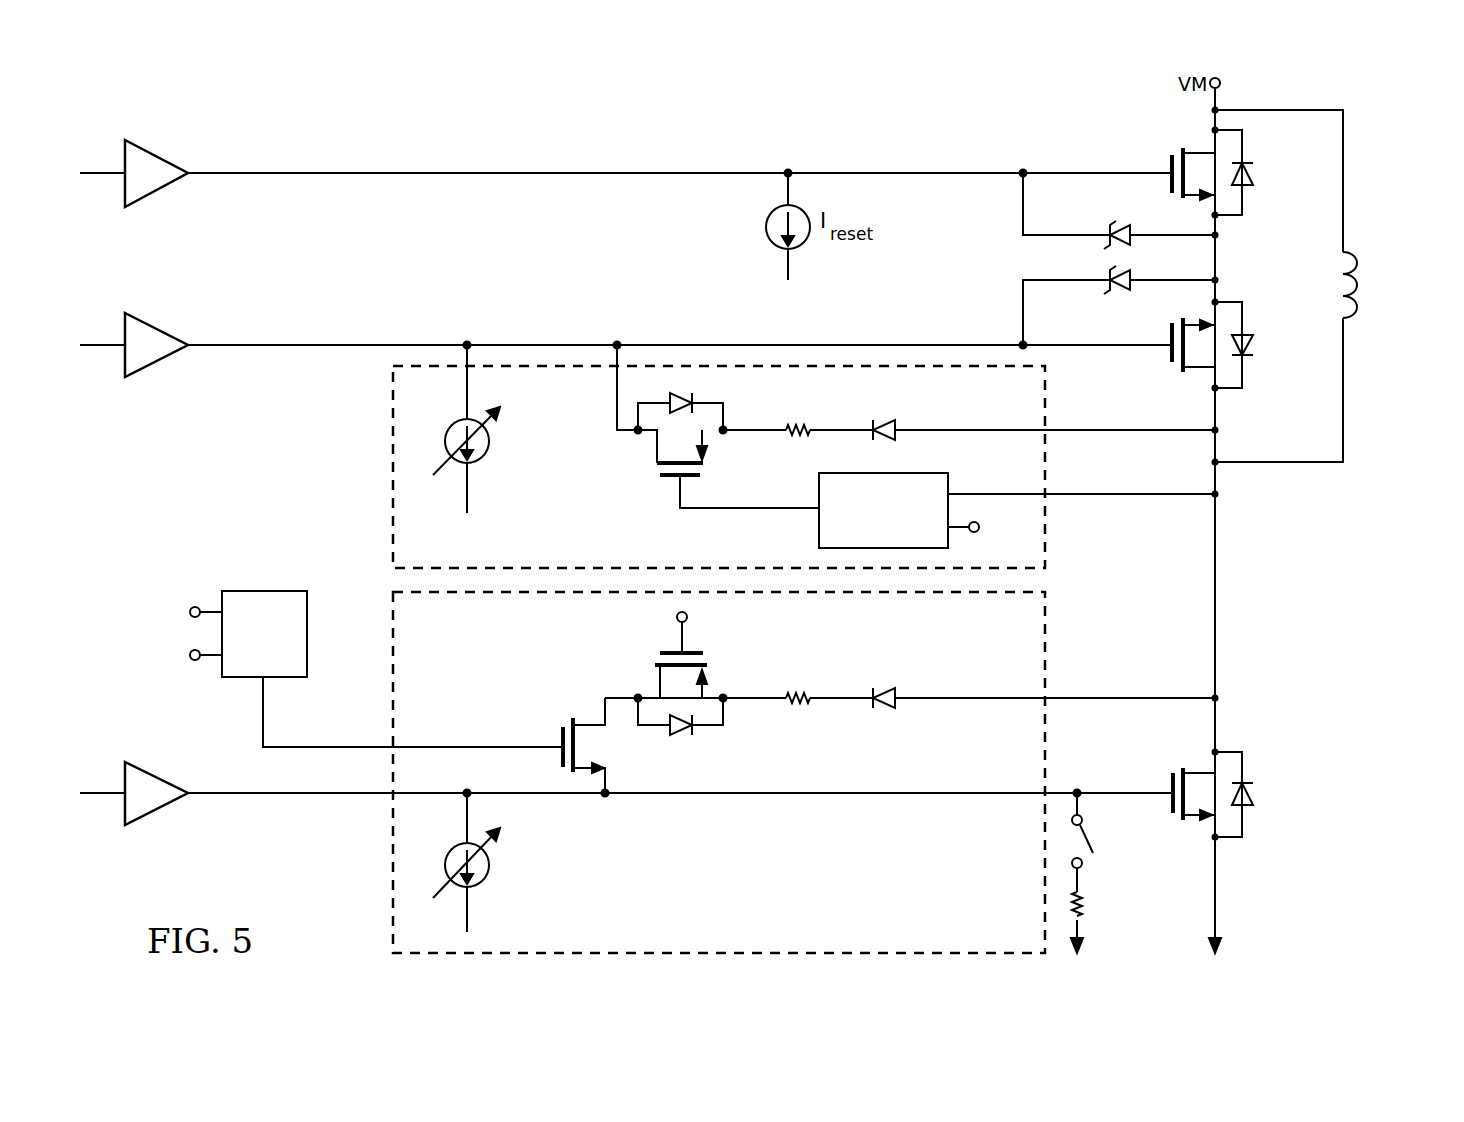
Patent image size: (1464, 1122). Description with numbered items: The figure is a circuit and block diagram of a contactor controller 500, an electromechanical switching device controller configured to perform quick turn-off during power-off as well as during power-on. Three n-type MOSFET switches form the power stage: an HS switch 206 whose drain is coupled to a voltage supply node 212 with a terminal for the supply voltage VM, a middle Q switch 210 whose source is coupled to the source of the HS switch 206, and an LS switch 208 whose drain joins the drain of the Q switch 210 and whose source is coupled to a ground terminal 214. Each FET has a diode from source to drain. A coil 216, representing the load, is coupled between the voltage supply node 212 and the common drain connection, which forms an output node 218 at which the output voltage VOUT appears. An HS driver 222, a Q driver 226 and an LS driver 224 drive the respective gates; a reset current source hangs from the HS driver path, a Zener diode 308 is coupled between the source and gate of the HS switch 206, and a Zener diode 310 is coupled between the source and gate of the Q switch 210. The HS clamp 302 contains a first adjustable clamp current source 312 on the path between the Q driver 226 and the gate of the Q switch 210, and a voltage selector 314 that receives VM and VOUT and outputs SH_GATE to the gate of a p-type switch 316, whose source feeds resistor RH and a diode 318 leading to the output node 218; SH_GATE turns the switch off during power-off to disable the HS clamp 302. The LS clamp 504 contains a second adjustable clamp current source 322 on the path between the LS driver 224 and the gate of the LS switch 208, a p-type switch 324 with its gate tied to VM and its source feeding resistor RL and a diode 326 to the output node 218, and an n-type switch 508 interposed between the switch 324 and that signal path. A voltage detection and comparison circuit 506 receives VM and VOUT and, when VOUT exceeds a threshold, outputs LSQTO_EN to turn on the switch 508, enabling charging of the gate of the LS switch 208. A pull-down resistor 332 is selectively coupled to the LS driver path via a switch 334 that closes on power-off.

The contactor controller 500 is at (1437, 100).
The HS driver 222 is at (158, 160).
The Q driver 226 is at (158, 332).
The LS driver 224 is at (160, 808).
The HS switch 206 is at (1170, 162).
The middle (Q) switch 210 is at (1170, 358).
The LS switch 208 is at (1170, 783).
The voltage supply node 212 is at (1280, 112).
The coil 216 is at (1360, 268).
The output node 218 is at (1278, 464).
The ground terminal 214 is at (1216, 892).
The Zener diode 308 is at (1112, 224).
The Zener diode 310 is at (1108, 302).
The HS clamp 302 is at (386, 430).
The first adjustable clamp current source 312 is at (452, 424).
The switch 316 is at (660, 478).
The diode 318 is at (873, 420).
The voltage selector 314 is at (818, 528).
The voltage detection and comparison circuit 506 is at (253, 590).
The switch 508 is at (560, 740).
The switch 324 is at (660, 653).
The diode 326 is at (873, 690).
The second adjustable clamp current source 322 is at (452, 850).
The LS clamp 504 is at (818, 900).
The switch 334 is at (1088, 838).
The pull-down resistor 332 is at (1082, 905).